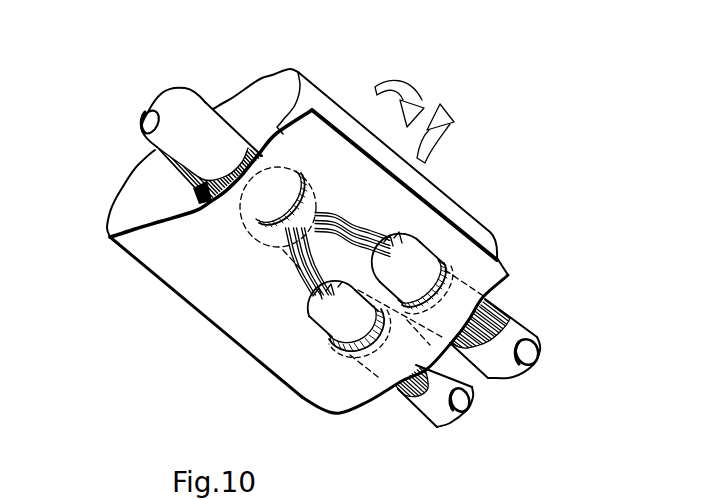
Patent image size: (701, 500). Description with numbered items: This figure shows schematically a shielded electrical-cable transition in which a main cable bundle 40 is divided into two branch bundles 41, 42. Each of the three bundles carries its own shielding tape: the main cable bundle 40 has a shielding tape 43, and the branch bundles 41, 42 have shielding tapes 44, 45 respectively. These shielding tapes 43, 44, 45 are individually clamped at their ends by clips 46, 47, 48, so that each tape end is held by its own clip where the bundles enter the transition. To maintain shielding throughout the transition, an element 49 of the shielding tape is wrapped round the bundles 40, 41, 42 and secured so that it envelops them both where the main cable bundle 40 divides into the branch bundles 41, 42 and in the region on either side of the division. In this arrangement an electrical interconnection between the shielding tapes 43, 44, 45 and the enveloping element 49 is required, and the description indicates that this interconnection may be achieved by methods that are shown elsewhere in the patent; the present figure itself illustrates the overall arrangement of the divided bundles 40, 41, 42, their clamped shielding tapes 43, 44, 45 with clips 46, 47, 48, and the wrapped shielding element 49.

The main cable bundle 40 is at (206, 94).
The branch bundle 41 is at (406, 408).
The branch bundle 42 is at (531, 323).
The shielding tape 43 is at (157, 147).
The shielding tape 44 is at (443, 418).
The shielding tape 45 is at (535, 355).
The clip 46 is at (257, 229).
The clip 47 is at (343, 343).
The clip 48 is at (450, 268).
The element of the shielding tape 49 is at (198, 321).